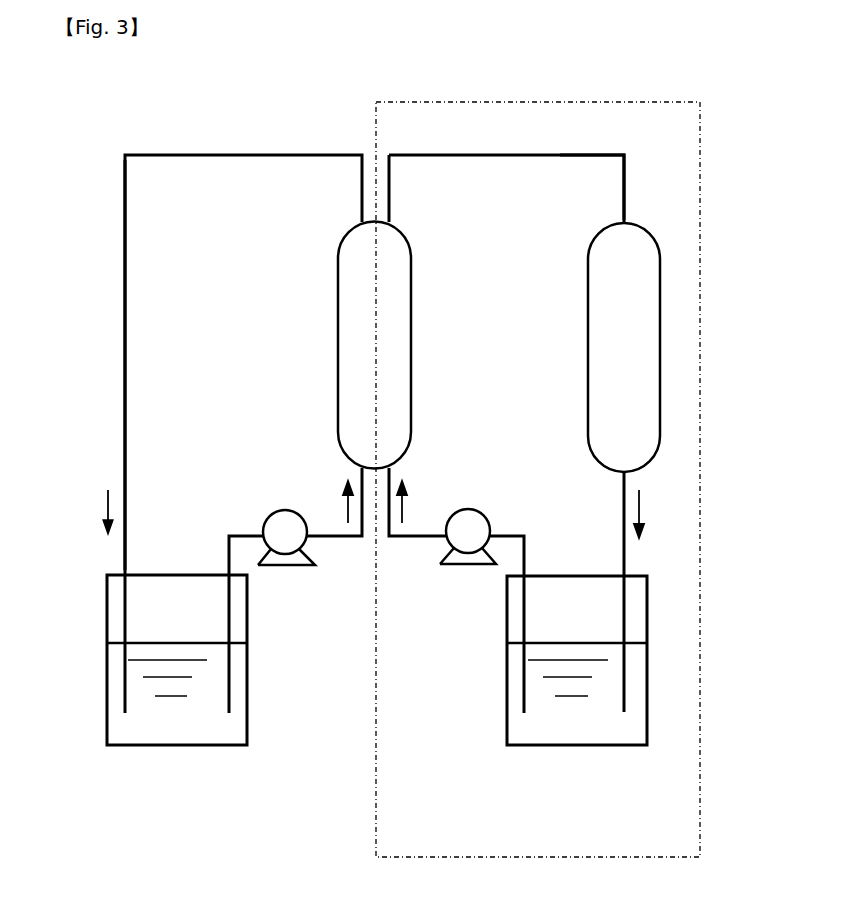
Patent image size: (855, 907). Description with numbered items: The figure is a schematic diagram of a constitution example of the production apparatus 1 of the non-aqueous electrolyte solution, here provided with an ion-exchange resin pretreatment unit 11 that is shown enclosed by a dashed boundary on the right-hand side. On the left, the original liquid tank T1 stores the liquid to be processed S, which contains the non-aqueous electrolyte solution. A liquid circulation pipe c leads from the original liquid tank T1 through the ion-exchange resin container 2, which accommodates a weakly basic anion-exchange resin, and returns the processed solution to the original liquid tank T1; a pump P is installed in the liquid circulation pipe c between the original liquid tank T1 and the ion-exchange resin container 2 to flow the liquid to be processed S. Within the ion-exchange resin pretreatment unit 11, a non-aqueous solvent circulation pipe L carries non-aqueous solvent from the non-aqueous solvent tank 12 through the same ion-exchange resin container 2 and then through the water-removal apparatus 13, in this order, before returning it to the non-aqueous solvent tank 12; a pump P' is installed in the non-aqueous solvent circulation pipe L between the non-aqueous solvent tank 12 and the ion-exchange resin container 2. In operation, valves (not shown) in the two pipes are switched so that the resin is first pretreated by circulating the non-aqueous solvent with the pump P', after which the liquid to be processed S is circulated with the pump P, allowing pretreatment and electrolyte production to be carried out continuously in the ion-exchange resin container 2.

The production apparatus of the non-aqueous electrolyte solution 1 is at (237, 89).
The ion-exchange resin container 2 is at (374, 344).
The ion-exchange resin pretreatment unit 11 is at (702, 172).
The non-aqueous solvent tank 12 is at (616, 752).
The water-removal apparatus 13 is at (624, 347).
The liquid circulation pipe c is at (122, 385).
The non-aqueous solvent circulation pipe L is at (626, 185).
The pump P is at (265, 509).
The pump P' is at (495, 510).
The liquid to be processed S is at (183, 733).
The original liquid tank T1 is at (210, 750).